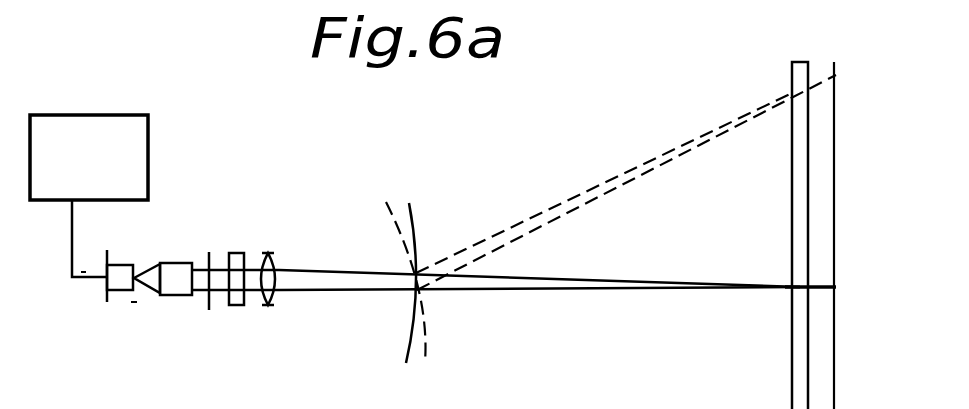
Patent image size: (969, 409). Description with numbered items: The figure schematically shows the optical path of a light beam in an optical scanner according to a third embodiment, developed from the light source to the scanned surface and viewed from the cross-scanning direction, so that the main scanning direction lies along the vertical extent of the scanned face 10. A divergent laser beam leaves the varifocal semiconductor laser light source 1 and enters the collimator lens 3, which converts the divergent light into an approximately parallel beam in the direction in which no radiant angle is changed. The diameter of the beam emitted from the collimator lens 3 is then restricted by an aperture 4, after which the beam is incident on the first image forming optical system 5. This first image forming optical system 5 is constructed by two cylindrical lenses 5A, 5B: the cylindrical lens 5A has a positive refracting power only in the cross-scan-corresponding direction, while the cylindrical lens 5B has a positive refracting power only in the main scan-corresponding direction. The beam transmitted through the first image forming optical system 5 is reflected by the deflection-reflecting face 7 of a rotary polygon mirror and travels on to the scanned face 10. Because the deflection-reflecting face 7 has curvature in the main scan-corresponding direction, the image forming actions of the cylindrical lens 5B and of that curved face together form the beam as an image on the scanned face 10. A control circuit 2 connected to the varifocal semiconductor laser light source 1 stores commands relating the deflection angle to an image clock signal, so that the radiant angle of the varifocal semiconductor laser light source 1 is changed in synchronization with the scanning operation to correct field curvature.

The varifocal semiconductor laser light source 1 is at (122, 276).
The control circuit 2 is at (150, 186).
The collimator lens 3 is at (177, 277).
The aperture 4 is at (210, 264).
The first image forming optical system 5 is at (277, 236).
The cylindrical lens 5A is at (238, 306).
The cylindrical lens 5B is at (270, 306).
The deflection-reflecting face 7 is at (413, 229).
The scanned face 10 is at (834, 250).